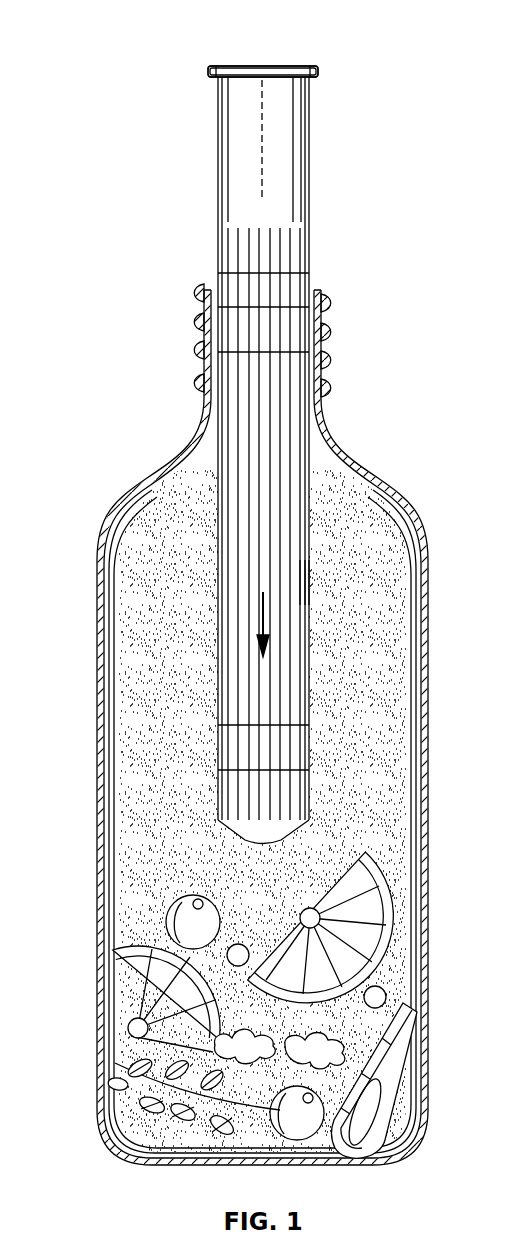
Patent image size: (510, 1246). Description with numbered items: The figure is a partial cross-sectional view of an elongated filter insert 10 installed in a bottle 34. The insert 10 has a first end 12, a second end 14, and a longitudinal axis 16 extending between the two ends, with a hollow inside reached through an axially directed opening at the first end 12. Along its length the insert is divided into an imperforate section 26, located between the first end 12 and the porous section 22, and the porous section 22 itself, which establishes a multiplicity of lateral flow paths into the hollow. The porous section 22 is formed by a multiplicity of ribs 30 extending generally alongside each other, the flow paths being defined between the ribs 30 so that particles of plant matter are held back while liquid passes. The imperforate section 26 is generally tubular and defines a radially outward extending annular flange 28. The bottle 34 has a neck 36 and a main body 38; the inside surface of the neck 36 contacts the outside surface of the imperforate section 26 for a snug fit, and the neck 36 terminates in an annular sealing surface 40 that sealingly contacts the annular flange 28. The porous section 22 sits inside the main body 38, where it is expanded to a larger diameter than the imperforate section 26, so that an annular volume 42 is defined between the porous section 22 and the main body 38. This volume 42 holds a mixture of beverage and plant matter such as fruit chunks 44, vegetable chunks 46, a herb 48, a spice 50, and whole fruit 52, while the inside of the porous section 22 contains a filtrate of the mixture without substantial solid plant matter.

The elongated filter insert 10 is at (311, 129).
The first end 12 is at (306, 55).
The second end 14 is at (230, 838).
The longitudinal axis 16 is at (258, 133).
The porous section 22 is at (320, 713).
The imperforate section 26 is at (238, 178).
The annular flange 28 is at (210, 71).
The ribs 30 is at (295, 602).
The bottle 34 is at (152, 462).
The neck 36 is at (208, 366).
The main body 38 is at (101, 745).
The annular sealing surface 40 is at (316, 286).
The annular volume 42 is at (172, 724).
The fruit chunks 44 is at (375, 917).
The vegetable chunks 46 is at (330, 1050).
The herb 48 is at (180, 1094).
The spice 50 is at (382, 996).
The whole fruit 52 is at (168, 920).